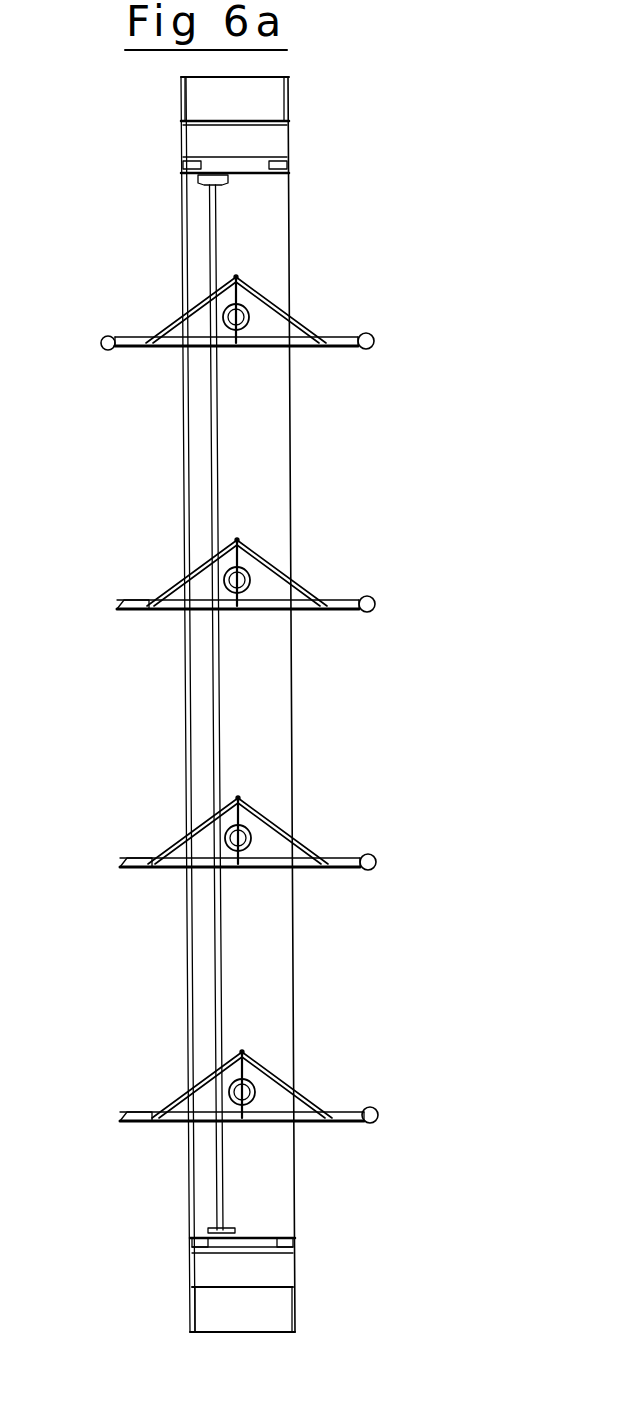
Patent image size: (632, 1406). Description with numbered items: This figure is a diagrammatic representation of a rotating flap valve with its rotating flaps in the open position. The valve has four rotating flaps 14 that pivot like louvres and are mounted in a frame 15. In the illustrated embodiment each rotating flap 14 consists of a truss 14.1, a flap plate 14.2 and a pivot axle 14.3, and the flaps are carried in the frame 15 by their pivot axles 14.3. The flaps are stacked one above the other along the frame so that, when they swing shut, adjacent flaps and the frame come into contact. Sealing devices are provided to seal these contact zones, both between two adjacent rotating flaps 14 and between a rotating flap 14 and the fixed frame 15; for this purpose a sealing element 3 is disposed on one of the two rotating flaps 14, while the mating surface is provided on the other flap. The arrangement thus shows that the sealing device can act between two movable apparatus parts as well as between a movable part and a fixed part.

The sealing element 3 is at (117, 610).
The rotating flap 14 is at (318, 765).
The truss 14.1 is at (329, 269).
The flap plate 14.2 is at (307, 394).
The pivot axle 14.3 is at (368, 323).
The frame 15 is at (349, 131).